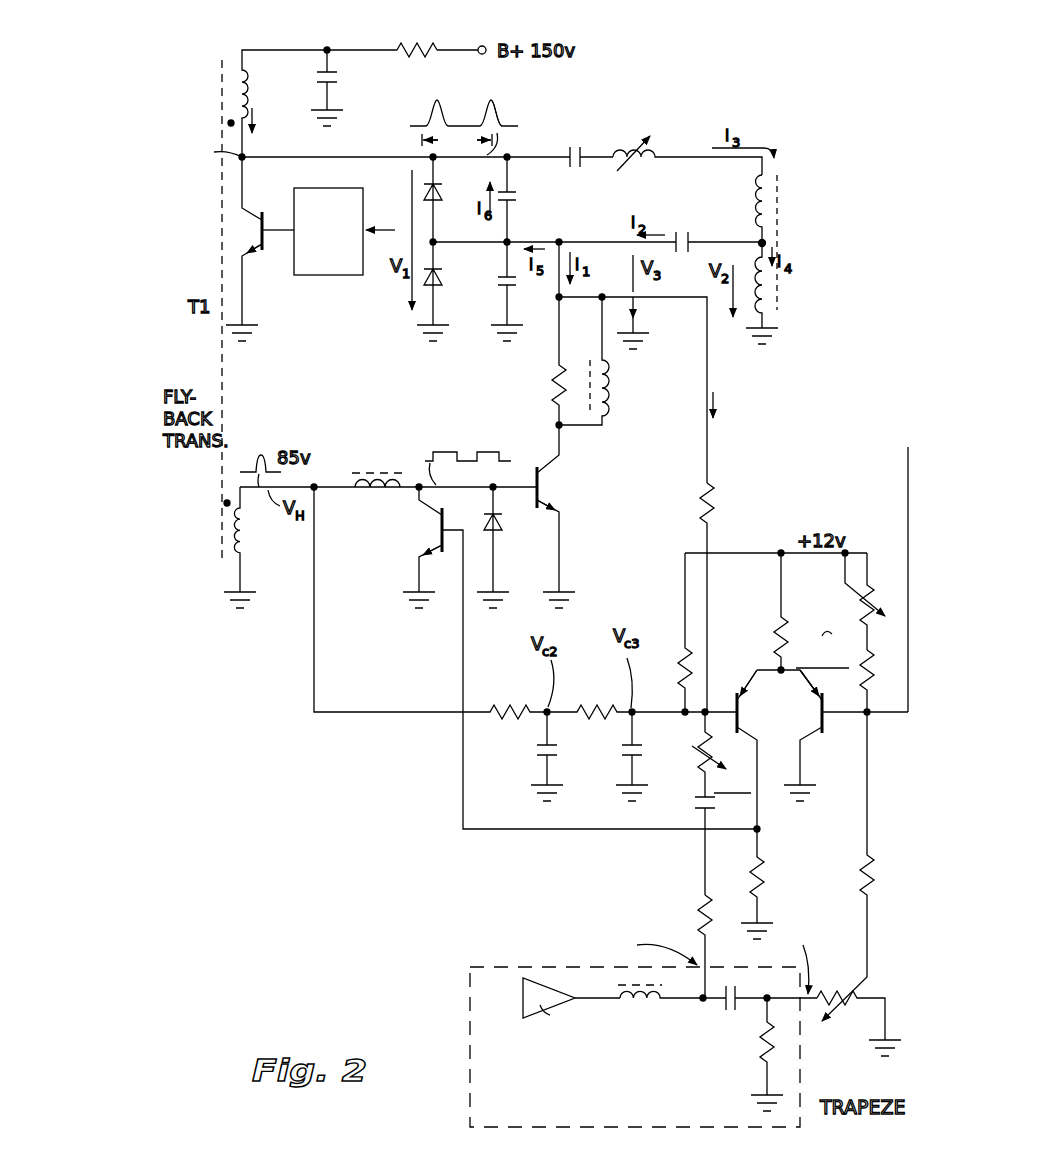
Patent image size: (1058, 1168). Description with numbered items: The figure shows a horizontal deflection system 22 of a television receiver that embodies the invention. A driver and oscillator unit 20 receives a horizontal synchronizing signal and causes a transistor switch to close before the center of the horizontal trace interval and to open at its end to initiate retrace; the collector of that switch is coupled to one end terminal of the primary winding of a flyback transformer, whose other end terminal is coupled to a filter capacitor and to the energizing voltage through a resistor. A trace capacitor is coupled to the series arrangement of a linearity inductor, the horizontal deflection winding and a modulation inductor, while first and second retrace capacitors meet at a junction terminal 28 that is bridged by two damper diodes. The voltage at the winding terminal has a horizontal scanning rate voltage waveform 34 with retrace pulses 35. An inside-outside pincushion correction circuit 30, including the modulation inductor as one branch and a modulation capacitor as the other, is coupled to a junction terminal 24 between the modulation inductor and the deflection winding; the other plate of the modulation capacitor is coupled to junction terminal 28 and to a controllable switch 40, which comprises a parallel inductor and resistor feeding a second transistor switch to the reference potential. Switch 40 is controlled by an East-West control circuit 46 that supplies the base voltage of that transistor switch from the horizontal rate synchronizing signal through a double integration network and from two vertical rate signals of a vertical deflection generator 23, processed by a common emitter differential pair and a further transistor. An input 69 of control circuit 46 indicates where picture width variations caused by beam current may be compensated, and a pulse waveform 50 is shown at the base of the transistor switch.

The driver and oscillator unit 20 is at (350, 275).
The horizontal deflection system 22 is at (391, 918).
The vertical deflection generator 23 is at (643, 1047).
The junction terminal 24 is at (761, 243).
The junction terminal 28 is at (437, 247).
The inside-outside pincushion correction circuit 30 is at (749, 354).
The horizontal scanning rate voltage waveform 34 is at (476, 82).
The retrace pulses 35 is at (498, 112).
The controllable switch 40 is at (607, 463).
The East-West control circuit 46 is at (813, 762).
The pulse waveform 50 is at (434, 455).
The input 69 is at (908, 512).